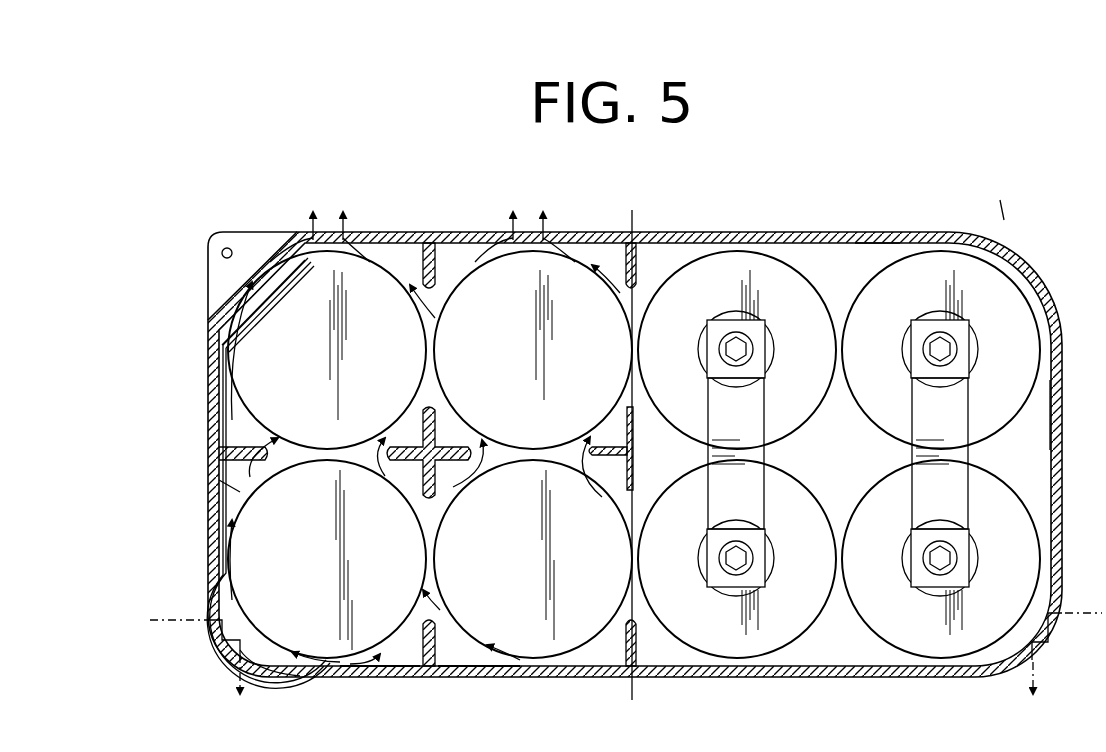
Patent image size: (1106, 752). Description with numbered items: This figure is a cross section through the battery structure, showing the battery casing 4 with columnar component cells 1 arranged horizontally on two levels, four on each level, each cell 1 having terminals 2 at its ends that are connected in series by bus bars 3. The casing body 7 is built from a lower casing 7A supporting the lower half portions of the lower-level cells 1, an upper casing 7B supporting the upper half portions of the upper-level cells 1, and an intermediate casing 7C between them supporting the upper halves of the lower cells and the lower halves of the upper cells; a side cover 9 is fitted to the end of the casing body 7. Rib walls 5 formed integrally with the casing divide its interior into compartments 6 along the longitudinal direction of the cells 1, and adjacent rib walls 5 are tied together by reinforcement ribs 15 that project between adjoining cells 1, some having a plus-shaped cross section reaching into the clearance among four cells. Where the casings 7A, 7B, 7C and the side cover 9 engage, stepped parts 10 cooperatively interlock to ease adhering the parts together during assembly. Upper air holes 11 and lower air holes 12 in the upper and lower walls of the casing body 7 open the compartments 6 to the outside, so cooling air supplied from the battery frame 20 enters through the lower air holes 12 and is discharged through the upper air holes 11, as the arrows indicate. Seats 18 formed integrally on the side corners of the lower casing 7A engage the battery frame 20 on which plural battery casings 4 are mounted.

The component cell 1 is at (278, 285).
The terminal 2 is at (760, 320).
The bus bar 3 is at (760, 415).
The battery casing 4 is at (812, 230).
The rib wall 5 is at (850, 262).
The compartment 6 is at (363, 394).
The casing body 7 is at (205, 410).
The lower casing 7A is at (262, 668).
The upper casing 7B is at (220, 293).
The intermediate casing 7C is at (222, 462).
The side cover 9 is at (1064, 403).
The stepped part 10 is at (213, 330).
The upper air hole 11 is at (300, 240).
The lower air hole 12 is at (345, 672).
The reinforcement rib 15 is at (420, 265).
The seat 18 is at (215, 605).
The battery frame 20 is at (160, 618).